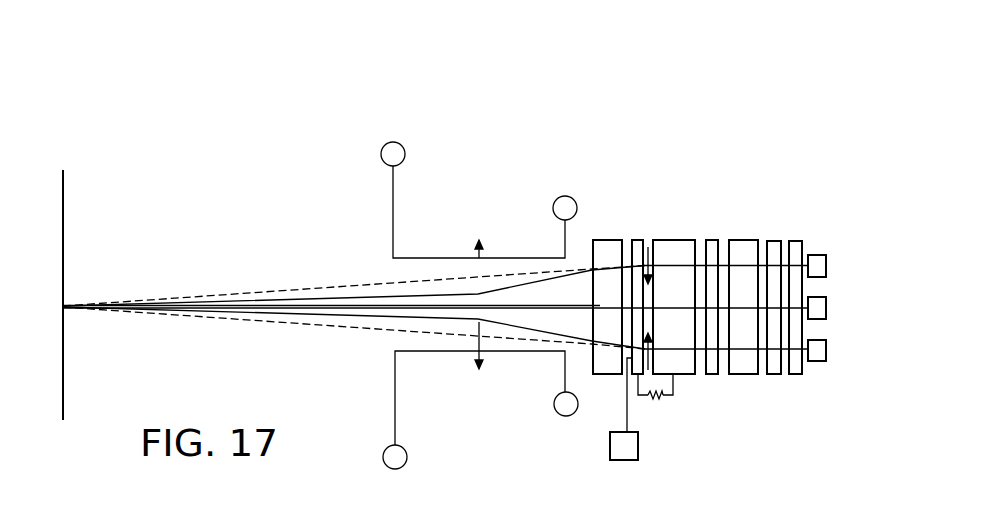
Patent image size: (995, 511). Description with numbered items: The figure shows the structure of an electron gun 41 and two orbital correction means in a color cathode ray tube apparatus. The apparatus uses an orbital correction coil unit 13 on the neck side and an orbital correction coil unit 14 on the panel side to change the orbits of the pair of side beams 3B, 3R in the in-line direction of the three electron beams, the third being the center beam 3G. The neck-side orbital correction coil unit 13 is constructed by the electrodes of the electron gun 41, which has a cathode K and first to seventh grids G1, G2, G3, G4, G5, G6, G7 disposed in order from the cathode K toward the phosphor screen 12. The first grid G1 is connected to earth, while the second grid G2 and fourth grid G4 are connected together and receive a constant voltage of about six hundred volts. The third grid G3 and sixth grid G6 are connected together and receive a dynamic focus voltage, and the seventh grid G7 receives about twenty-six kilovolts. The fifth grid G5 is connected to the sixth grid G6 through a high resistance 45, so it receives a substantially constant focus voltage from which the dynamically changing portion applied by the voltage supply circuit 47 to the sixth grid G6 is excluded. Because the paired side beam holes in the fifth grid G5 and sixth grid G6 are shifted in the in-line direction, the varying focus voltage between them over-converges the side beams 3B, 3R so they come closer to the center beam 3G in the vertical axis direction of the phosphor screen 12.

The phosphor screen 12 is at (67, 205).
The orbital correction coil unit 14 is at (457, 183).
The electron gun 41 is at (560, 136).
The orbital correction coil unit 13 is at (660, 146).
The seventh grid G7 is at (604, 240).
The sixth grid G6 is at (638, 240).
The fifth grid G5 is at (676, 240).
The fourth grid G4 is at (714, 240).
The third grid G3 is at (743, 376).
The second grid G2 is at (772, 240).
The first grid G1 is at (793, 376).
The cathode K is at (818, 253).
The center beam 3G is at (273, 302).
The side beam 3B is at (347, 293).
The side beam 3R is at (337, 316).
The high resistance 45 is at (657, 402).
The voltage supply circuit 47 is at (610, 447).